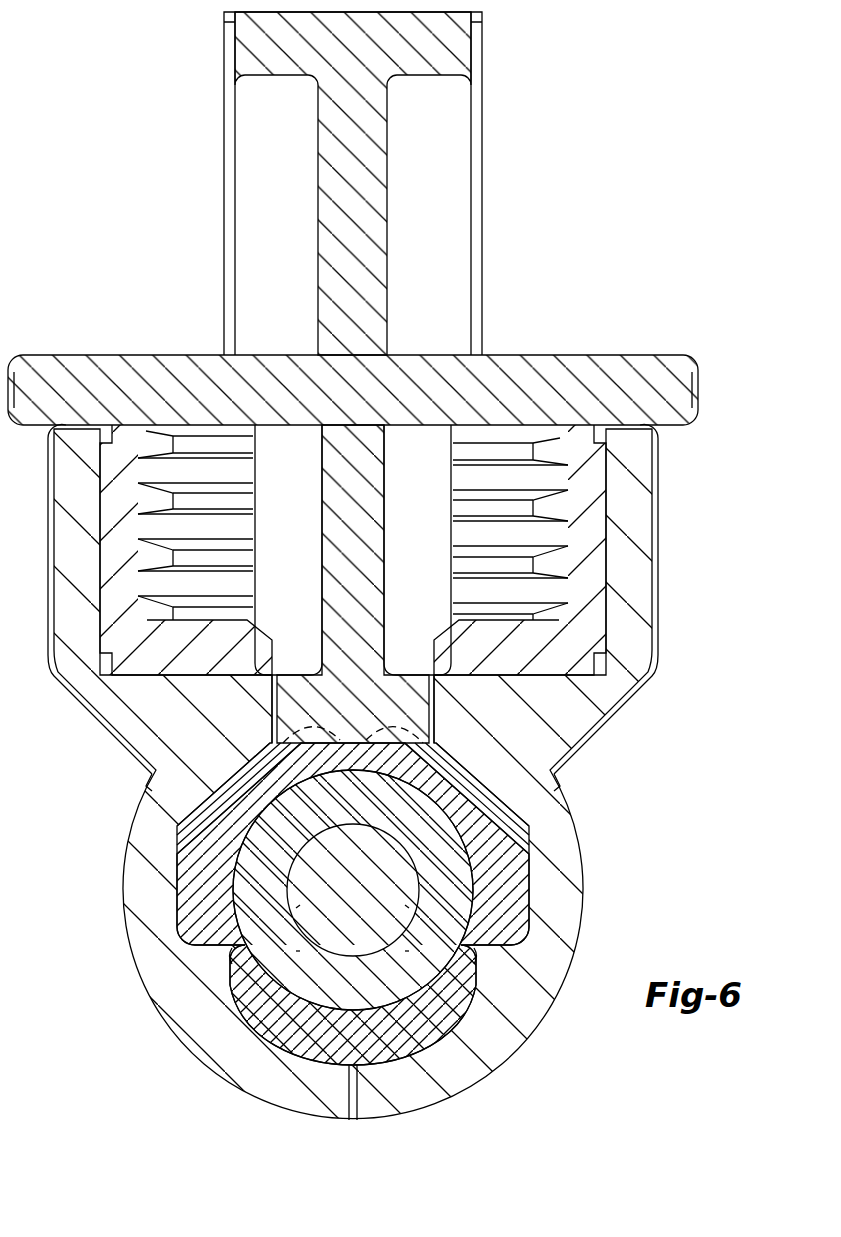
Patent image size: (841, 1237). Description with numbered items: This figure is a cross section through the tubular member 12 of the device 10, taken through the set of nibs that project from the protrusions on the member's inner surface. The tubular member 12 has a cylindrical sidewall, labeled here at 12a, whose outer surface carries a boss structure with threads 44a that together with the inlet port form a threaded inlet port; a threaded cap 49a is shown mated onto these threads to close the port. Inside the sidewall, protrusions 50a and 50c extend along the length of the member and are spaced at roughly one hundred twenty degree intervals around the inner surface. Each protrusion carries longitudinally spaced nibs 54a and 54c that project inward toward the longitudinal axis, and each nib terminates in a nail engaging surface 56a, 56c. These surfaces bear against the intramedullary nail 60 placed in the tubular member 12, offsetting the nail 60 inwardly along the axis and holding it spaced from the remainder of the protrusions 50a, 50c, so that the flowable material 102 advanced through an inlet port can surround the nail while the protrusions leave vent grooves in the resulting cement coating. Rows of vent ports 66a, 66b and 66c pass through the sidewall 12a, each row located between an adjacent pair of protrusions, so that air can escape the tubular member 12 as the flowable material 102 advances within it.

The ball joint assembly 10 is at (692, 761).
The tubular member 12 is at (568, 862).
The housing side wall 12a is at (633, 553).
The threads 44a is at (597, 477).
The threaded cap 49a is at (510, 356).
The protrusion 50a is at (230, 962).
The protrusion 50c is at (480, 965).
The nib 54a is at (233, 937).
The nib 54c is at (233, 953).
The nail engaging surface 56a is at (470, 930).
The nail engaging surface 56c is at (472, 948).
The nail 60 is at (548, 820).
The vent ports 66a is at (143, 768).
The vent ports 66b is at (560, 768).
The vent ports 66c is at (357, 1112).
The flowable material 102 is at (505, 887).